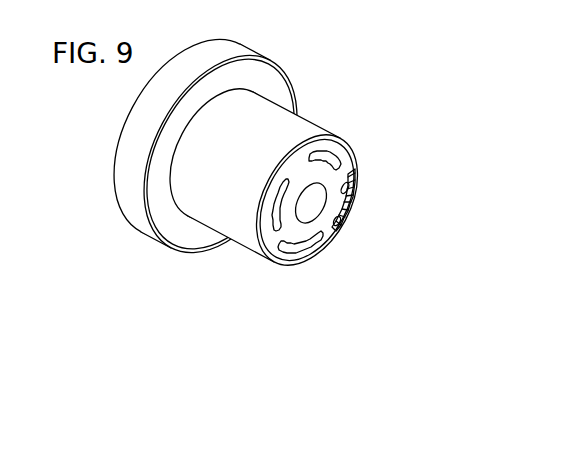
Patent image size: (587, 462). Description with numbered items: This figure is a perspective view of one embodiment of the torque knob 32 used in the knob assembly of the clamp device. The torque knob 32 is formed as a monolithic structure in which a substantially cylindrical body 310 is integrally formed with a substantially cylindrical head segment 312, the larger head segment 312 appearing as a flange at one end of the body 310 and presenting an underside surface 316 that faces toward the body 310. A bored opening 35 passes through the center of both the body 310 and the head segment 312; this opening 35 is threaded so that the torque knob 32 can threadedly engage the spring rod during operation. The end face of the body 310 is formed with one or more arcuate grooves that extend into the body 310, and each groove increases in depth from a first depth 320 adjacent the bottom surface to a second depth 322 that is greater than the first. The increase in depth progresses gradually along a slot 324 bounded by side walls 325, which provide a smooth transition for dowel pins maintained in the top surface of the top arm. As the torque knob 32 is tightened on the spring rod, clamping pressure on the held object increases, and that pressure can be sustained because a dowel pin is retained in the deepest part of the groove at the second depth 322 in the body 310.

The torque knob 32 is at (378, 77).
The head segment 312 is at (206, 161).
The underside surface 316 is at (183, 230).
The body 310 is at (238, 232).
The bored opening 35 is at (310, 203).
The first depth 320 is at (350, 178).
The second depth 322 is at (340, 223).
The slot 324 is at (353, 198).
The side walls 325 is at (348, 213).